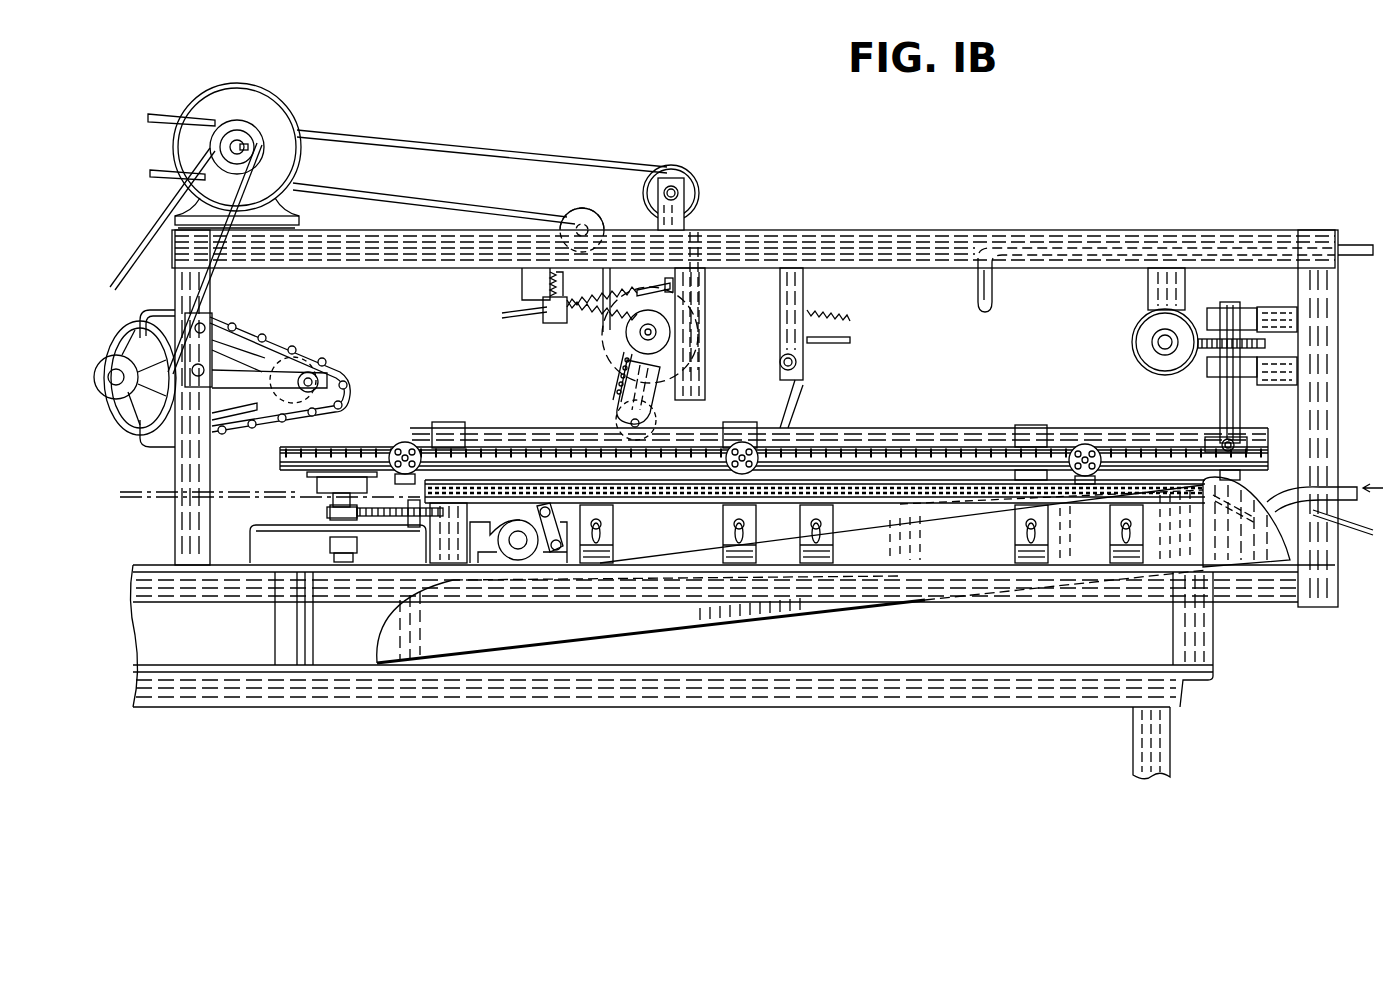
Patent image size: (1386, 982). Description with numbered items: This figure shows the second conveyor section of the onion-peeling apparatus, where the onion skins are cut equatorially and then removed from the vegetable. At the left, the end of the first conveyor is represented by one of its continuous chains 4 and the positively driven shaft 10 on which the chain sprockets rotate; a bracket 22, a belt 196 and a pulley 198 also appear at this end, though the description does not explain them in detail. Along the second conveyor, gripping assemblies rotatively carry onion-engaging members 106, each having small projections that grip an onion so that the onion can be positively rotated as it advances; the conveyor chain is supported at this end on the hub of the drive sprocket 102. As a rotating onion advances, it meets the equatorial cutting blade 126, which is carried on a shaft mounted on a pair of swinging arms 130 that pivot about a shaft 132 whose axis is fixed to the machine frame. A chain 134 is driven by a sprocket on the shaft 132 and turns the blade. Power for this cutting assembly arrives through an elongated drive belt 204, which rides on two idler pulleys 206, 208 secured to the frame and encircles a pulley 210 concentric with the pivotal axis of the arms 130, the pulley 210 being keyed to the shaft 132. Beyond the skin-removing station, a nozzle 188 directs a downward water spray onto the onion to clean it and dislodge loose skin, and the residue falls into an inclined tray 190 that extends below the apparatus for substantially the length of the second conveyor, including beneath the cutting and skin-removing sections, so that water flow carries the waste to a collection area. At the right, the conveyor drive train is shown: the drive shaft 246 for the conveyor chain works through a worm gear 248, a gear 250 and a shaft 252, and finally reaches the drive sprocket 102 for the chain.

The continuous chain 4 is at (228, 497).
The shaft 10 is at (528, 540).
The tensioning bracket 22 is at (282, 337).
The drive sprocket 102 is at (1248, 443).
The onion-engaging member 106 is at (398, 445).
The equatorial cutting blade 126 is at (618, 420).
The swinging arms 130 is at (650, 400).
The shaft 132 is at (640, 334).
The chain 134 is at (615, 380).
The nozzle 188 is at (992, 300).
The tray 190 is at (1000, 546).
The drive belt 196 is at (214, 275).
The drive pulley 198 is at (271, 104).
The drive belt 204 is at (415, 200).
The idler pulley 206 is at (585, 216).
The idler pulley 208 is at (678, 170).
The pulley 210 is at (608, 338).
The drive shaft 246 is at (1160, 340).
The worm gear 248 is at (1146, 346).
The gear 250 is at (1265, 345).
The shaft 252 is at (1224, 388).